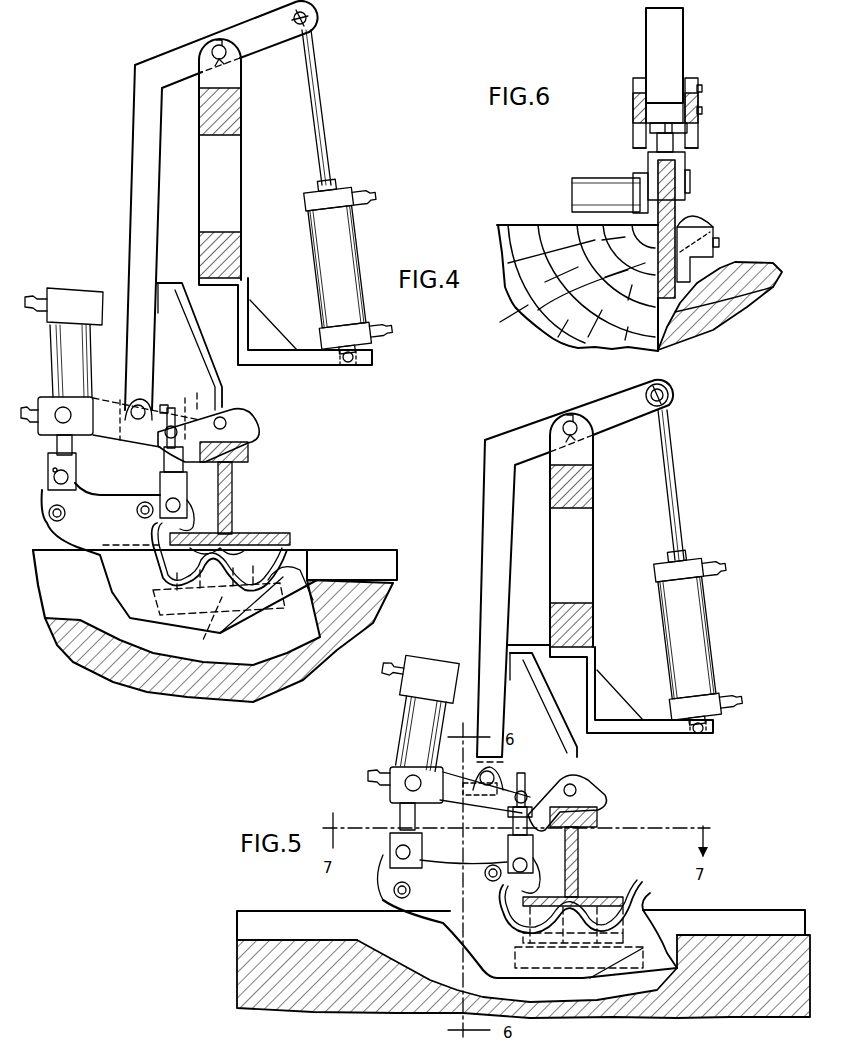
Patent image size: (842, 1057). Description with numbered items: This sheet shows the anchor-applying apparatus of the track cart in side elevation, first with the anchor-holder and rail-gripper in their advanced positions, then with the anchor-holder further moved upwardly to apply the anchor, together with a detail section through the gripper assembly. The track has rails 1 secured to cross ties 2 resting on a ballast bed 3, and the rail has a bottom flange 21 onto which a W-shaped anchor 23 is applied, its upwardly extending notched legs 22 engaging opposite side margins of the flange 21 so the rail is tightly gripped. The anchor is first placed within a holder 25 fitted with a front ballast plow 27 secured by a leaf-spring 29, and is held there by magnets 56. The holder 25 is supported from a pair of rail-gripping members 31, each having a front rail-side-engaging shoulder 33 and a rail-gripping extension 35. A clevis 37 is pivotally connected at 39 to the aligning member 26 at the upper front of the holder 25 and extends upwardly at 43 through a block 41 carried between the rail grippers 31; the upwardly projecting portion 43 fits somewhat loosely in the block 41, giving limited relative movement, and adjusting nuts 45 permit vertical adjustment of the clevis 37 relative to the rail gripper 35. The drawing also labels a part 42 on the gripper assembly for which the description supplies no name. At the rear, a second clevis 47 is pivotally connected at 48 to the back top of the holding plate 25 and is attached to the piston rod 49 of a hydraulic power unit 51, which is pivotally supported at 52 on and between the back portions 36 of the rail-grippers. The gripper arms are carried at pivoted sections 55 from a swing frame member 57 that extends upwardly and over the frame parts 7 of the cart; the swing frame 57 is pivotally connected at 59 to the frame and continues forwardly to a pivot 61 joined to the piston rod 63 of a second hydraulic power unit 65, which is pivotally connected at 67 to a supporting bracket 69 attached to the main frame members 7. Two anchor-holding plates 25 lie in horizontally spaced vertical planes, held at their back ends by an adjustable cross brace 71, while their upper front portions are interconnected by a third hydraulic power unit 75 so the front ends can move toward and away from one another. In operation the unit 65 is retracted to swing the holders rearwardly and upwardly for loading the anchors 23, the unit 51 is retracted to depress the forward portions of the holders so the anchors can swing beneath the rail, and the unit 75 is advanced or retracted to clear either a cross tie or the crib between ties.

In FIG. 4, the rails 1 is at (236, 497).
In FIG. 5, the rails 1 is at (580, 868).
In FIG. 4, the cross ties 2 is at (372, 548).
In FIG. 6, the cross ties 2 is at (500, 322).
In FIG. 5, the cross ties 2 is at (762, 910).
In FIG. 4, the ballast bed 3 is at (178, 690).
In FIG. 6, the ballast bed 3 is at (755, 262).
In FIG. 5, the ballast bed 3 is at (330, 1000).
In FIG. 4, the frame 7 is at (240, 205).
In FIG. 5, the frame 7 is at (590, 577).
In FIG. 4, the bottom flange 21 is at (275, 535).
In FIG. 5, the bottom flange 21 is at (597, 895).
In FIG. 4, the notched legs 22 is at (158, 562).
In FIG. 5, the notched legs 22 is at (636, 882).
In FIG. 4, the W-shaped anchor 23 is at (228, 553).
In FIG. 4, the anchor holder 25 is at (115, 597).
In FIG. 6, the anchor holder 25 is at (678, 210).
In FIG. 5, the anchor holder 25 is at (440, 927).
In FIG. 4, the aligning member 26 is at (193, 520).
In FIG. 5, the aligning member 26 is at (540, 888).
In FIG. 4, the front ballast plow 27 is at (320, 592).
In FIG. 6, the front ballast plow 27 is at (713, 222).
In FIG. 5, the front ballast plow 27 is at (672, 918).
In FIG. 4, the leaf-spring 29 is at (262, 630).
In FIG. 6, the leaf-spring 29 is at (745, 300).
In FIG. 5, the leaf-spring 29 is at (560, 968).
In FIG. 4, the rail-gripping members 31 is at (250, 412).
In FIG. 6, the rail-gripping members 31 is at (640, 77).
In FIG. 4, the front rail-side-engaging shoulder 33 is at (250, 452).
In FIG. 5, the front rail-side-engaging shoulder 33 is at (598, 815).
In FIG. 4, the rail-gripping extension 35 is at (243, 426).
In FIG. 6, the rail-gripping extension 35 is at (640, 128).
In FIG. 5, the rail-gripping extension 35 is at (590, 782).
In FIG. 4, the back portions 36 is at (125, 385).
In FIG. 4, the clevis 37 is at (164, 485).
In FIG. 6, the clevis 37 is at (686, 160).
In FIG. 5, the clevis 37 is at (520, 821).
In FIG. 4, the pivot connection 39 is at (170, 512).
In FIG. 6, the pivot connection 39 is at (692, 180).
In FIG. 5, the pivot connection 39 is at (513, 862).
In FIG. 4, the block 41 is at (180, 410).
In FIG. 6, the block 41 is at (660, 118).
In FIG. 5, the block 41 is at (462, 808).
In FIG. 6, the side plate 42 is at (633, 90).
In FIG. 5, the side plate 42 is at (578, 788).
In FIG. 4, the upwardly projecting portion 43 is at (170, 404).
In FIG. 5, the upwardly projecting portion 43 is at (507, 814).
In FIG. 4, the adjusting nuts 45 is at (160, 446).
In FIG. 6, the adjusting nuts 45 is at (688, 128).
In FIG. 5, the adjusting nuts 45 is at (525, 795).
In FIG. 4, the second clevis 47 is at (77, 480).
In FIG. 5, the second clevis 47 is at (389, 847).
In FIG. 5, the pivot connection 48 is at (387, 865).
In FIG. 4, the piston rod 49 is at (57, 447).
In FIG. 5, the piston rod 49 is at (400, 812).
In FIG. 4, the hydraulic power unit 51 is at (72, 300).
In FIG. 5, the hydraulic power unit 51 is at (408, 710).
In FIG. 4, the pivotal support 52 is at (46, 398).
In FIG. 5, the pivotal support 52 is at (395, 770).
In FIG. 4, the pivoted sections 55 is at (138, 404).
In FIG. 5, the pivoted sections 55 is at (495, 772).
In FIG. 4, the magnets 56 is at (212, 612).
In FIG. 6, the magnets 56 is at (719, 241).
In FIG. 4, the swing frame member 57 is at (134, 140).
In FIG. 6, the swing frame member 57 is at (682, 24).
In FIG. 5, the swing frame member 57 is at (480, 580).
In FIG. 4, the pivot connection 59 is at (213, 46).
In FIG. 5, the pivot connection 59 is at (565, 421).
In FIG. 4, the pivot 61 is at (308, 18).
In FIG. 5, the pivot 61 is at (670, 392).
In FIG. 4, the piston rod 63 is at (318, 75).
In FIG. 5, the piston rod 63 is at (677, 462).
In FIG. 4, the second hydraulic power unit 65 is at (358, 248).
In FIG. 5, the second hydraulic power unit 65 is at (712, 645).
In FIG. 4, the pivotal connection 67 is at (350, 363).
In FIG. 5, the pivotal connection 67 is at (698, 735).
In FIG. 4, the supporting bracket 69 is at (273, 350).
In FIG. 5, the supporting bracket 69 is at (620, 700).
In FIG. 4, the adjustable cross brace 71 is at (66, 515).
In FIG. 6, the third hydraulic power unit 75 is at (571, 192).